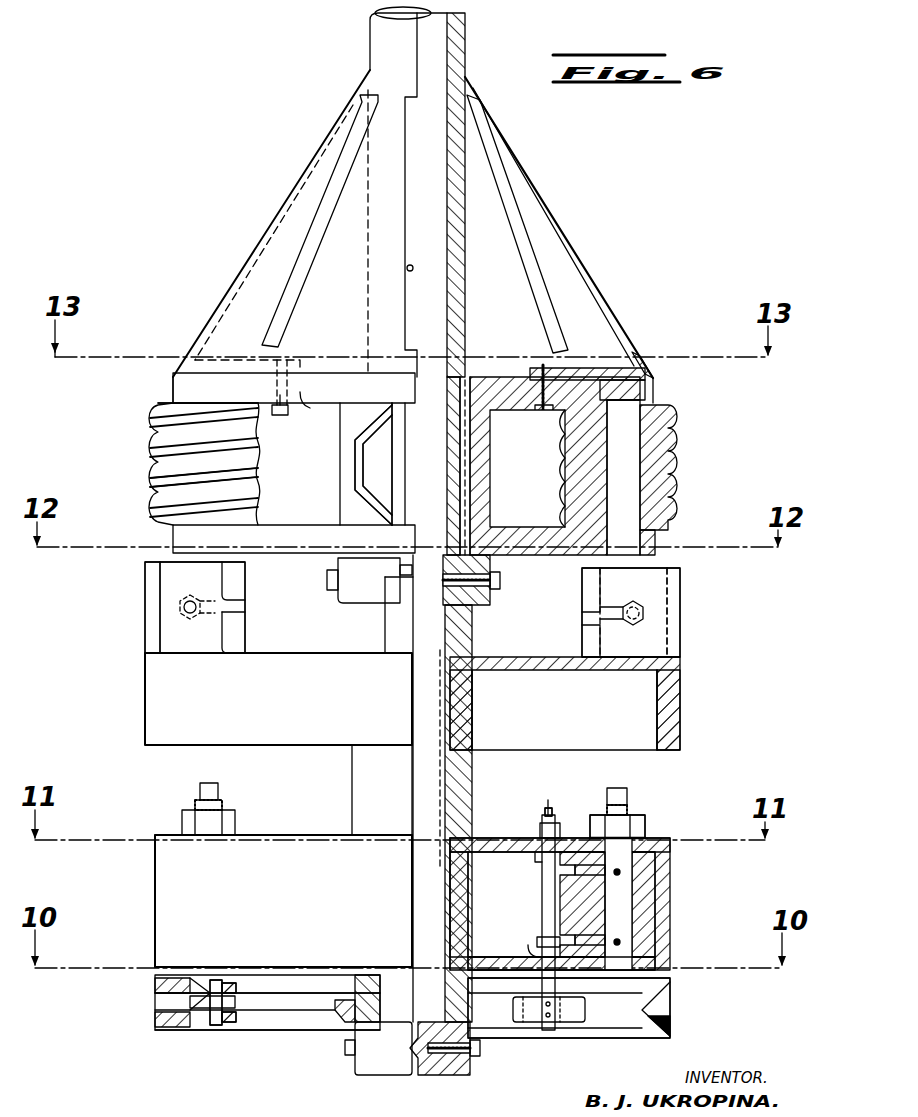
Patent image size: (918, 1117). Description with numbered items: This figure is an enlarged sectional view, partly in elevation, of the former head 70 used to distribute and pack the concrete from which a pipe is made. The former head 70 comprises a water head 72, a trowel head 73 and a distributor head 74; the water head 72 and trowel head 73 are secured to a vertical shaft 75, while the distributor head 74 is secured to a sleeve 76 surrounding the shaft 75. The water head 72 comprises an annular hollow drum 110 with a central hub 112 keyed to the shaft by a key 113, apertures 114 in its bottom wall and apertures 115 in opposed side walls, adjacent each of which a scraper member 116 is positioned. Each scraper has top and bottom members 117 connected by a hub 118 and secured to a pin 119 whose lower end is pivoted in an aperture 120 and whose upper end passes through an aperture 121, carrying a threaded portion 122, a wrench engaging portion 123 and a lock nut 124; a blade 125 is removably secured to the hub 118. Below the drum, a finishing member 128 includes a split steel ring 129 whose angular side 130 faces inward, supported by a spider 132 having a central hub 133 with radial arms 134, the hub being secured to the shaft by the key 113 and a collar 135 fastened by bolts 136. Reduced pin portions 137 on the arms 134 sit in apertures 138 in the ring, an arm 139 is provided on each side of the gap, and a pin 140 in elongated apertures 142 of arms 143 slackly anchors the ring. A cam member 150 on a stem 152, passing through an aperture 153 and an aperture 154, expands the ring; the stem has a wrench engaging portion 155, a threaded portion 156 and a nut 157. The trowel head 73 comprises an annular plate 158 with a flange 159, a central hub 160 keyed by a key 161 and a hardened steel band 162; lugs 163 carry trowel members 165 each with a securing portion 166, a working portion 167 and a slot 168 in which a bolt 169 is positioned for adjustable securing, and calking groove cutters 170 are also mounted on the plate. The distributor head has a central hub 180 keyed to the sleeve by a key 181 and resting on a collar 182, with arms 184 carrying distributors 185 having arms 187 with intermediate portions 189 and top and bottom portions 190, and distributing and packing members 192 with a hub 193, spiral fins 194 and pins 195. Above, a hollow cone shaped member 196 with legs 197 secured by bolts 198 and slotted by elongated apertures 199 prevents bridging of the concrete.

The former head 70 is at (560, 216).
The water head 72 is at (152, 885).
The trowel head 73 is at (143, 690).
The distributor head 74 is at (170, 385).
The vertical shaft 75 is at (440, 31).
The sleeve 76 is at (462, 53).
The annular hollow drum 110 is at (290, 850).
The central hub 112 is at (458, 897).
The key 113 is at (448, 882).
The apertures 114 is at (478, 956).
The apertures 115 is at (672, 845).
The scraper member 116 is at (672, 910).
The top and bottom members 117 is at (590, 873).
The hub 118 is at (598, 897).
The pin 119 is at (612, 917).
The aperture 120 is at (640, 950).
The aperture 121 is at (637, 845).
The threaded portion 122 is at (196, 805).
The wrench engaging portion 123 is at (206, 788).
The lock nut 124 is at (185, 822).
The blade 125 is at (657, 885).
The finishing member 128 is at (233, 1040).
The split steel ring 129 is at (158, 992).
The angular side 130 is at (163, 1034).
The spider 132 is at (305, 1012).
The central hub 133 is at (368, 1005).
The arms 134 is at (280, 1008).
The collar 135 is at (388, 1070).
The bolts 136 is at (476, 1057).
The reduced pin portions 137 is at (162, 1002).
The apertures 138 is at (162, 1018).
The arm 139 is at (618, 1028).
The pin 140 is at (213, 982).
The elongated apertures 142 is at (226, 1005).
The arms 143 is at (233, 985).
The cam member 150 is at (570, 1022).
The stem 152 is at (545, 903).
The aperture 153 is at (532, 958).
The aperture 154 is at (538, 859).
The wrench engaging portion 155 is at (549, 810).
The threaded portion 156 is at (545, 826).
The nut 157 is at (540, 831).
The annular plate 158 is at (540, 670).
The flange 159 is at (657, 705).
The central hub 160 is at (466, 711).
The key 161 is at (446, 731).
The hardened steel band 162 is at (681, 715).
The lugs 163 is at (170, 628).
The trowel member 165 is at (143, 585).
The securing portion 166 is at (232, 636).
The working portion 167 is at (145, 608).
The slot 168 is at (233, 598).
The bolt 169 is at (192, 598).
The calking groove cutters 170 is at (392, 623).
The central hub 180 is at (486, 484).
The key 181 is at (468, 456).
The collar 182 is at (470, 598).
The arms 184 is at (178, 533).
The distributors 185 is at (354, 447).
The arms 187 is at (358, 459).
The intermediate portion 189 is at (352, 476).
The top and bottom portions 190 is at (366, 408).
The distributing and packing members 192 is at (150, 440).
The hub 193 is at (170, 410).
The spiral fins 194 is at (152, 466).
The pins 195 is at (625, 513).
The cone shaped member 196 is at (280, 236).
The legs 197 is at (598, 370).
The bolts 198 is at (286, 417).
The elongated apertures 199 is at (290, 281).